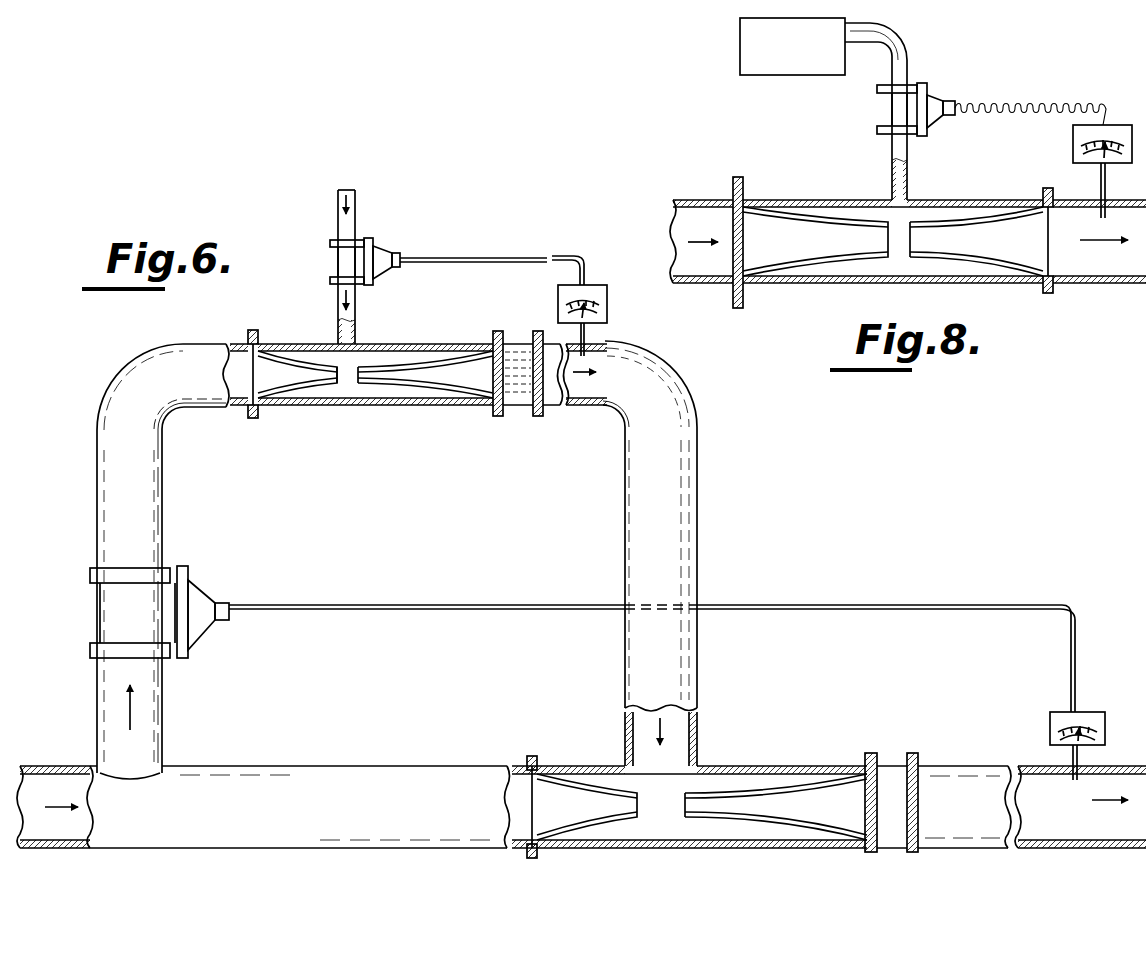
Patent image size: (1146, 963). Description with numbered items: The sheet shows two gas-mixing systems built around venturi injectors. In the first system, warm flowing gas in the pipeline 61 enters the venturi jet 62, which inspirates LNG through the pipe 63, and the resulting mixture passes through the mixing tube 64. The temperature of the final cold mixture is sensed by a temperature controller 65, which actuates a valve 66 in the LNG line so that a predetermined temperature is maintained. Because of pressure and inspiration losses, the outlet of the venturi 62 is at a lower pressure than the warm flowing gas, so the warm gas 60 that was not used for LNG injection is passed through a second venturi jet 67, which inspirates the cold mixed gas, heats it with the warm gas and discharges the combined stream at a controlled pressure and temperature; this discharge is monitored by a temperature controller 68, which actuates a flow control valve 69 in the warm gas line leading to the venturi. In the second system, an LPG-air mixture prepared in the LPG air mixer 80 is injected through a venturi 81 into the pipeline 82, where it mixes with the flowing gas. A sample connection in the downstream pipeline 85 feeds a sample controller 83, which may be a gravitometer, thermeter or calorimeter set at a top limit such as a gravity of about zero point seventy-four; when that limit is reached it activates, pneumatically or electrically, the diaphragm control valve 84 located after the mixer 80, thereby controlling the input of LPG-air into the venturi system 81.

In FIG. 6, the warm gas 60 is at (68, 828).
In FIG. 6, the pipeline 61 is at (113, 723).
In FIG. 6, the venturi jet 62 is at (340, 383).
In FIG. 6, the pipe 63 is at (336, 296).
In FIG. 6, the mixing tube 64 is at (380, 406).
In FIG. 6, the temperature controller 65 is at (600, 284).
In FIG. 6, the valve 66 is at (377, 248).
In FIG. 6, the venturi jet 67 is at (642, 806).
In FIG. 6, the temperature controller 68 is at (1050, 724).
In FIG. 6, the flow control valve 69 is at (196, 601).
In FIG. 8, the LPG air mixer 80 is at (750, 47).
In FIG. 8, the venturi 81 is at (880, 218).
In FIG. 8, the pipeline 82 is at (701, 200).
In FIG. 8, the sample controller 83 is at (1128, 126).
In FIG. 8, the control valve 84 is at (933, 100).
In FIG. 8, the pipeline 85 is at (1100, 248).